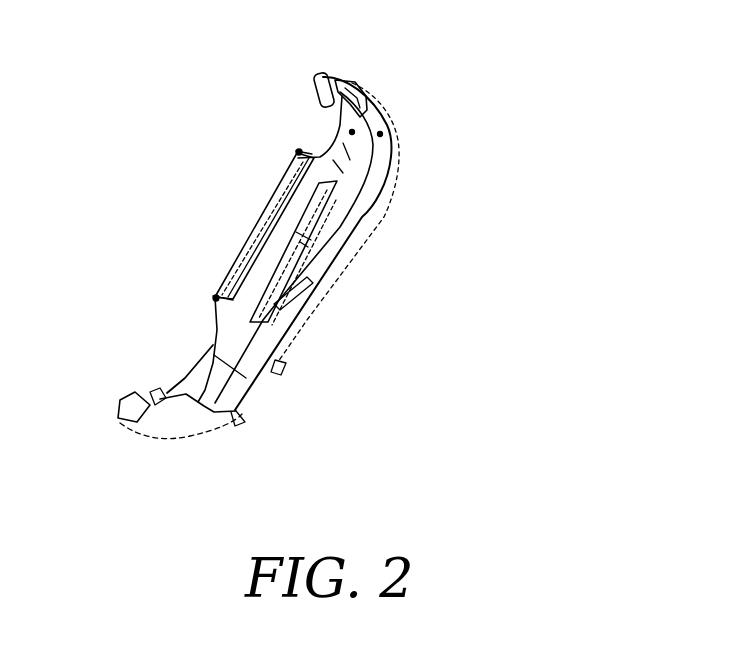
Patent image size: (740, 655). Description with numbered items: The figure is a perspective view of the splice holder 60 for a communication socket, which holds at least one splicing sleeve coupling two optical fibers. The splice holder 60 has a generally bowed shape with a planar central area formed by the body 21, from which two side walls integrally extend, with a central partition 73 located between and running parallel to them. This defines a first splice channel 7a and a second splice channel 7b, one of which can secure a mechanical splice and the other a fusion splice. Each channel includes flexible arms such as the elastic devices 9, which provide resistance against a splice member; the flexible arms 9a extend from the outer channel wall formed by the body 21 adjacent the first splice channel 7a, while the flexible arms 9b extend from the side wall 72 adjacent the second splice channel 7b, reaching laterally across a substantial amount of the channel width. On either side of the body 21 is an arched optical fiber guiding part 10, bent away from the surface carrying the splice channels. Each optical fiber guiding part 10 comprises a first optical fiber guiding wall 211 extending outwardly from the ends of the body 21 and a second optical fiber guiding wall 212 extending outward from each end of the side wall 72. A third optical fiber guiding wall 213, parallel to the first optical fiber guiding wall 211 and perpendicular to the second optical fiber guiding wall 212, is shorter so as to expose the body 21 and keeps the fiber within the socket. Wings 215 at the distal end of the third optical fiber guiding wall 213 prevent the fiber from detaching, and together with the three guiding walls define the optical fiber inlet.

The optical fiber guiding part 10 is at (380, 134).
The second optical fiber guiding wall 212 is at (241, 387).
The body 21 is at (220, 323).
The wings 215 is at (320, 77).
The first optical fiber guiding wall 211 is at (352, 132).
The third optical fiber guiding wall 213 is at (370, 93).
The elastic devices 9 is at (313, 197).
The first splice channel 7a is at (278, 233).
The side wall 72 is at (282, 202).
The flexible arms of the first splice channel 9a is at (257, 287).
The central partition 73 is at (300, 229).
The second splice channel 7b is at (310, 255).
The flexible arms of the second splice channel 9b is at (288, 305).
The splice holder 60 is at (533, 226).